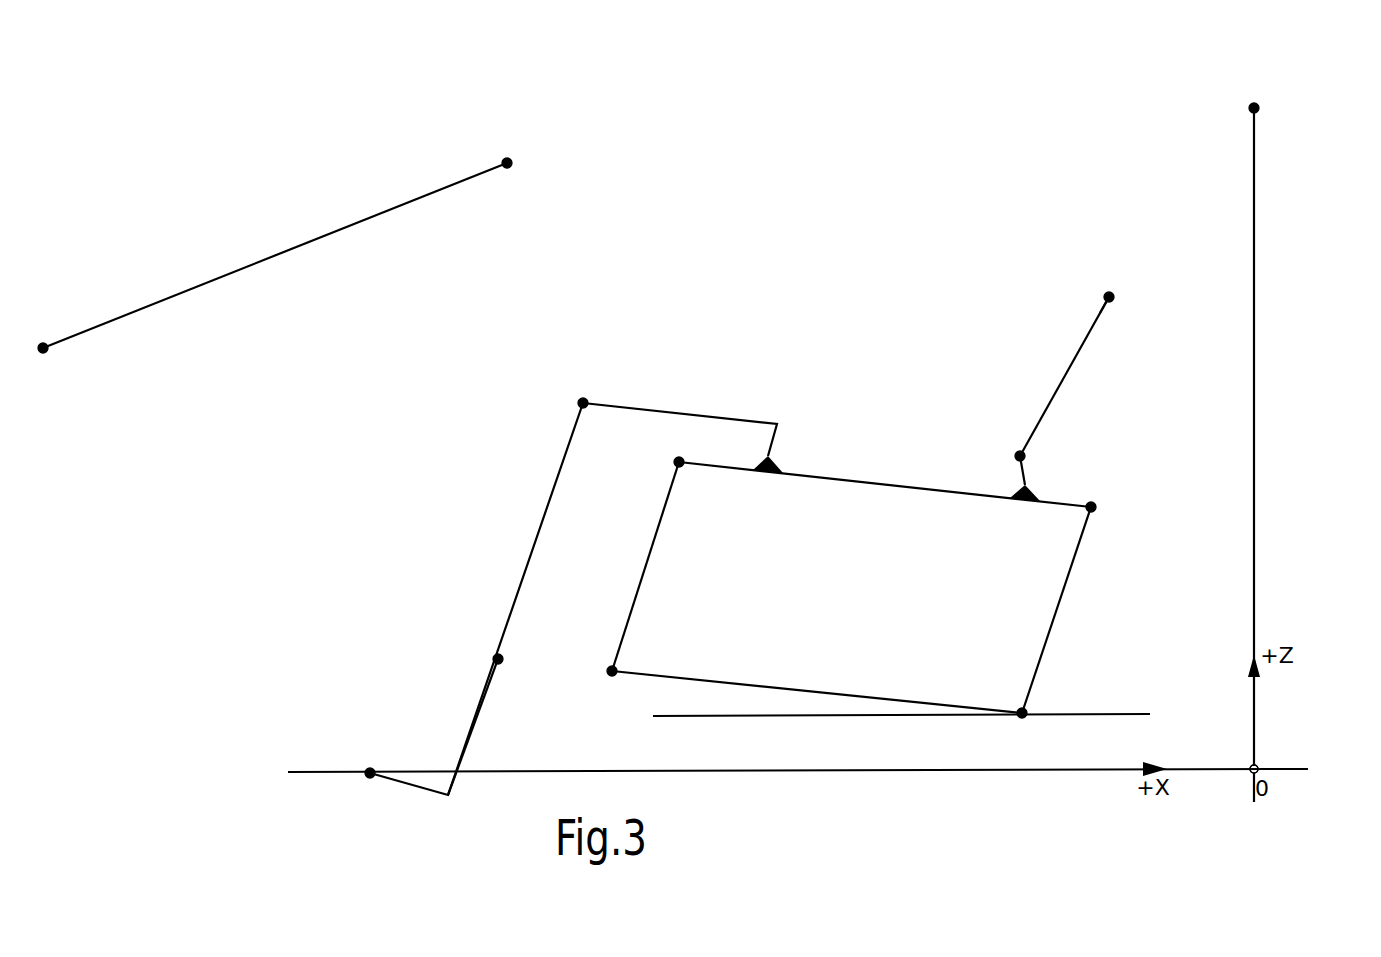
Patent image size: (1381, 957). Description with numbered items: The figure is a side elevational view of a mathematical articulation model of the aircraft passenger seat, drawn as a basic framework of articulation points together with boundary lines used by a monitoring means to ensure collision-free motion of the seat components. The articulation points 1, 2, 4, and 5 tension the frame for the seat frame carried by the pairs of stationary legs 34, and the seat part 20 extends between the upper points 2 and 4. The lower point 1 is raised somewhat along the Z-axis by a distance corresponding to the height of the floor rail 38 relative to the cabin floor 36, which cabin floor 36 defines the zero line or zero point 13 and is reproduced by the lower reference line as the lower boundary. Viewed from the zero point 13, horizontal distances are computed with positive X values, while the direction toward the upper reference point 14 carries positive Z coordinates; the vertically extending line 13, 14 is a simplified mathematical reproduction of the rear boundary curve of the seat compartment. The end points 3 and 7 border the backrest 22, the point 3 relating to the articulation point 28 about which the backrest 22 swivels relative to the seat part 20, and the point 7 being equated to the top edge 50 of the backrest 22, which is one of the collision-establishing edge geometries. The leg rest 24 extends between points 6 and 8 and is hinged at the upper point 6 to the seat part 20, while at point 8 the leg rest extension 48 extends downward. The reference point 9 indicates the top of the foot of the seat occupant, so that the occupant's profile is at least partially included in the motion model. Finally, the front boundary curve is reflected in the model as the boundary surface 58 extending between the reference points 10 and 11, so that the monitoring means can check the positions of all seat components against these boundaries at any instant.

The articulation point 1 is at (1038, 734).
The articulation point 2 is at (1115, 491).
The end point 3 is at (996, 450).
The articulation point 4 is at (654, 446).
The articulation point 5 is at (590, 686).
The articulation point 6 is at (573, 379).
The end point 7 is at (1134, 288).
The articulation point 8 is at (473, 657).
The reference point 9 is at (352, 750).
The reference point 10 is at (52, 372).
The reference point 11 is at (517, 189).
The zero point 13 is at (1288, 780).
The upper reference point 14 is at (1279, 97).
The seat part 20 is at (848, 480).
The backrest 22 is at (1075, 360).
The leg rest 24 is at (535, 548).
The articulation point 28 is at (1023, 455).
The stationary legs 34 is at (645, 570).
The cabin floor 36 is at (895, 773).
The floor rails 38 is at (782, 718).
The leg rest extension 48 is at (483, 703).
The top edge 50 is at (1108, 288).
The boundary surface 58 is at (305, 245).